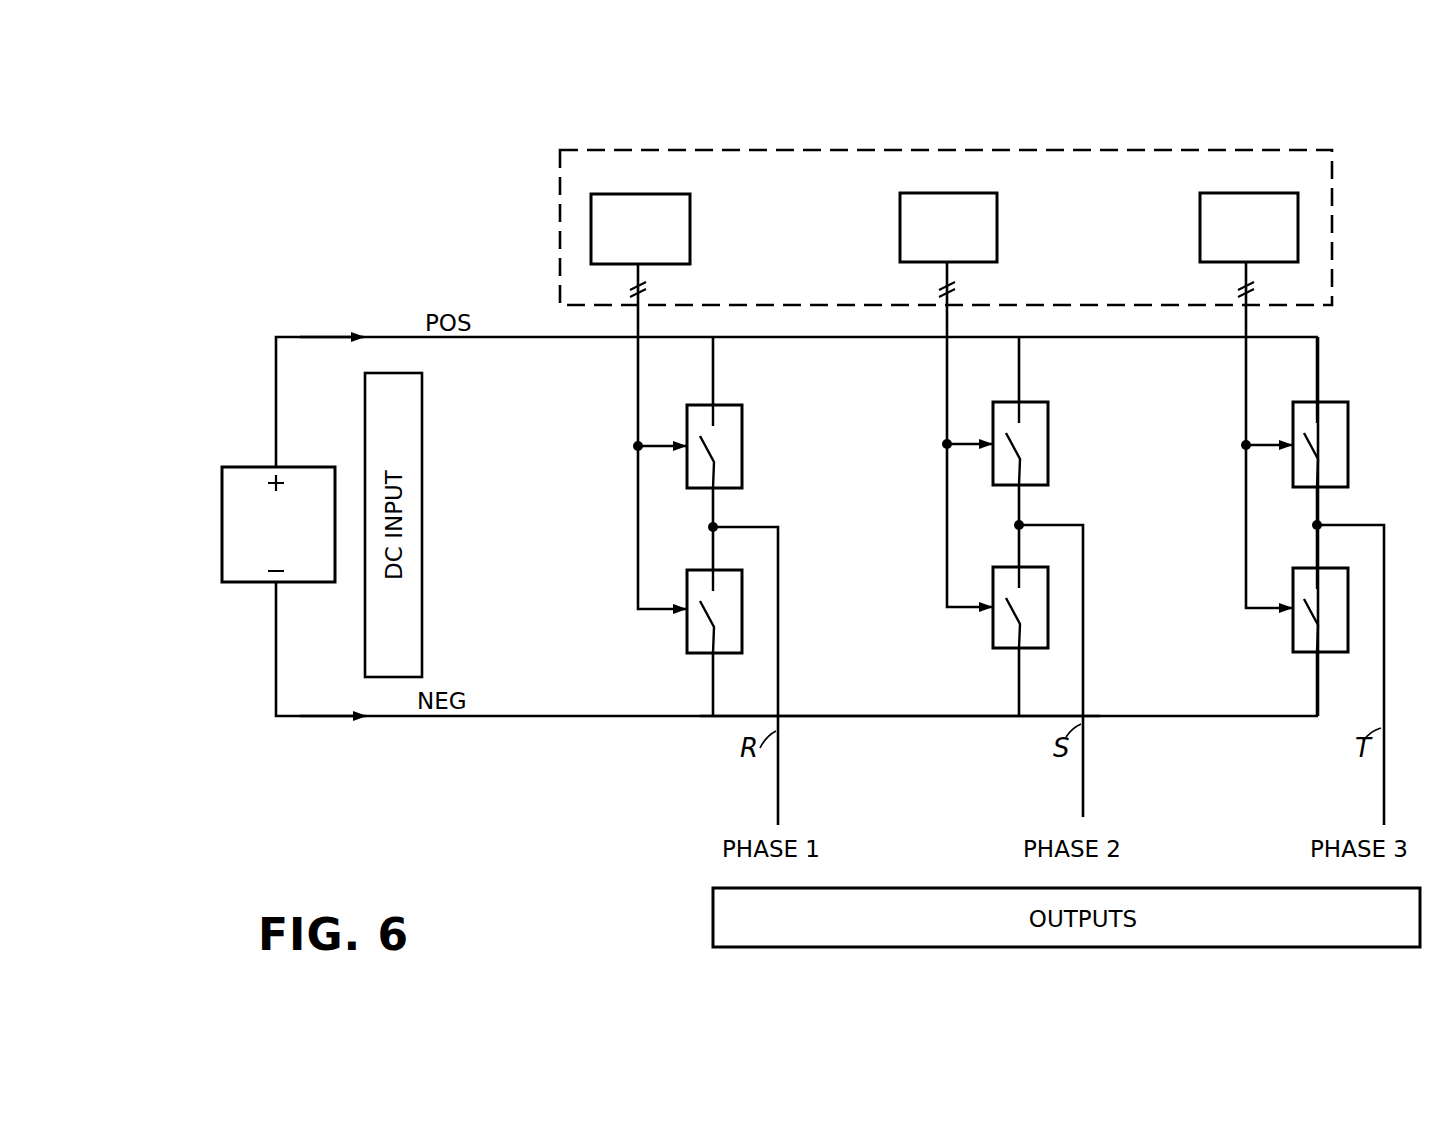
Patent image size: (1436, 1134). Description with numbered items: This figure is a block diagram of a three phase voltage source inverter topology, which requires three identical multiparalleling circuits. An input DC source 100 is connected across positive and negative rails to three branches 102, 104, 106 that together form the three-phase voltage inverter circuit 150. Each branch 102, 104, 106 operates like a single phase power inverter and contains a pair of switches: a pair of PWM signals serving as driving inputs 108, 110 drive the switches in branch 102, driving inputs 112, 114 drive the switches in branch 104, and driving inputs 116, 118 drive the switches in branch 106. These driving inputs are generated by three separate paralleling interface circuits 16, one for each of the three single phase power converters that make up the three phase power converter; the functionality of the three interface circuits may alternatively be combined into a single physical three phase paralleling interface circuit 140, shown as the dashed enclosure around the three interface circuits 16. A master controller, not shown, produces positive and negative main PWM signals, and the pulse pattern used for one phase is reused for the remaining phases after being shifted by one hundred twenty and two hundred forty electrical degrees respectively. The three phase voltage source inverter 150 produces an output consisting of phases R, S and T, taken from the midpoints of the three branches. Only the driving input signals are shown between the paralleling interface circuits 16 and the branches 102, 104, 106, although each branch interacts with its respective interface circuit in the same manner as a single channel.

The paralleling interface circuit 16 is at (652, 244).
The input DC source 100 is at (260, 586).
The branch 102 is at (724, 320).
The branch 104 is at (1020, 330).
The branch 106 is at (1320, 329).
The driving input 108 is at (590, 416).
The driving input 110 is at (590, 581).
The driving input 112 is at (897, 412).
The driving input 114 is at (897, 578).
The driving input 116 is at (1200, 413).
The driving input 118 is at (1200, 579).
The three phase paralleling interface circuit 140 is at (1197, 150).
The three-phase voltage inverter circuit 150 is at (890, 698).